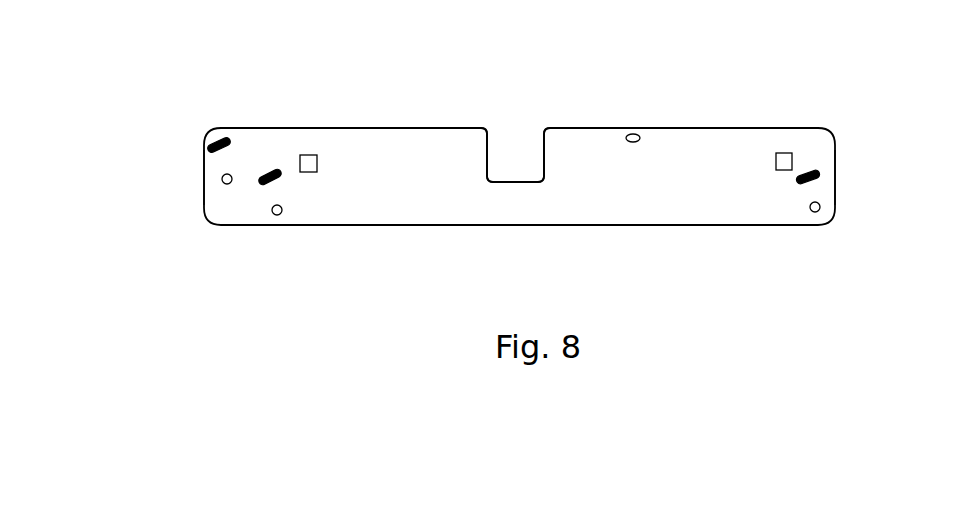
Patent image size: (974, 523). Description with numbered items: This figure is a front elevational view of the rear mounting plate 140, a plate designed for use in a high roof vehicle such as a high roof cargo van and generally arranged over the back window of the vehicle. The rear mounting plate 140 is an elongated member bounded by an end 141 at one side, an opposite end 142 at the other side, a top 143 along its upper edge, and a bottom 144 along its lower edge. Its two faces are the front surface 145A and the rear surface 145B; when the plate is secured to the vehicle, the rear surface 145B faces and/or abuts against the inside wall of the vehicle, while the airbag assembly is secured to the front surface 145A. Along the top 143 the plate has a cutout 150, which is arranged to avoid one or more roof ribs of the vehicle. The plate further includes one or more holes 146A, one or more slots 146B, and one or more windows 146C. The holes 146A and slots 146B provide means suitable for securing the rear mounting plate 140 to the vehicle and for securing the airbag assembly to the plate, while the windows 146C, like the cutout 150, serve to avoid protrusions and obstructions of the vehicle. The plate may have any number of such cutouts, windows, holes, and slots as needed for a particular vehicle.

The rear mounting plate 140 is at (764, 104).
The end 141 is at (204, 177).
The end 142 is at (835, 177).
The top 143 is at (413, 128).
The bottom 144 is at (458, 225).
The front surface 145A is at (692, 196).
The rear surface 145B is at (568, 128).
The hole 146A is at (278, 215).
The slot 146B is at (633, 134).
The window 146C is at (308, 155).
The cutout 150 is at (508, 131).